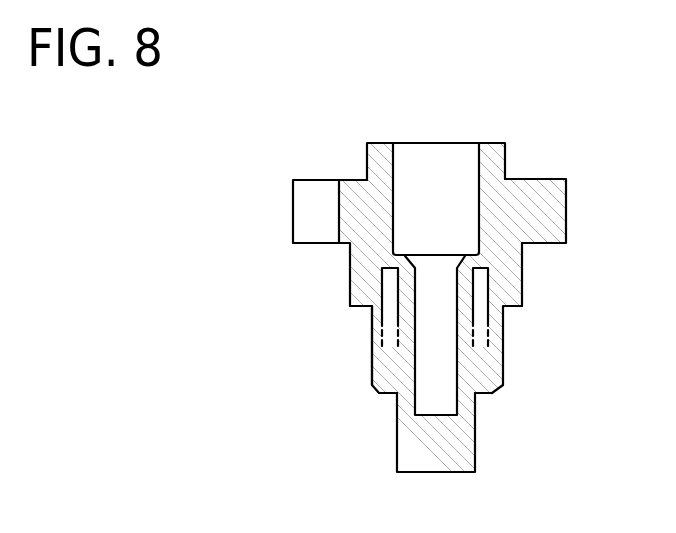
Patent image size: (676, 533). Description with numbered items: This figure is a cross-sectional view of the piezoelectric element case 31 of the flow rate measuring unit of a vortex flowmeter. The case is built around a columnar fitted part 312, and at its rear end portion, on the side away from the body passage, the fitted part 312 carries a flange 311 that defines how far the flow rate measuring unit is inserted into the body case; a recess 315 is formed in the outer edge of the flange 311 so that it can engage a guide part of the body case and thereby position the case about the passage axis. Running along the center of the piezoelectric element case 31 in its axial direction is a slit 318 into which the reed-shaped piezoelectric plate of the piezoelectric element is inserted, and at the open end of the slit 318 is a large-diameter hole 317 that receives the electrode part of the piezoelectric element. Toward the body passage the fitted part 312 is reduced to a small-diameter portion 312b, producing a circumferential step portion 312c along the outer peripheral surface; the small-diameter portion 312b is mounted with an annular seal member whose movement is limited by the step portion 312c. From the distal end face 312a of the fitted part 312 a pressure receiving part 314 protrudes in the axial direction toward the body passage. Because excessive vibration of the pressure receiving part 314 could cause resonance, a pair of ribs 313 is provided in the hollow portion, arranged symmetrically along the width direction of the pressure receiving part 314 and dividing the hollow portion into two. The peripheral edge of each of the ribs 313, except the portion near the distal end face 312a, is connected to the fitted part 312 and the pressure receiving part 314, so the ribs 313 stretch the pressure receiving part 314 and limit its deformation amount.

The piezoelectric element case 31 is at (602, 122).
The flange 311 is at (545, 213).
The fitted part 312 is at (350, 278).
The distal end face 312a is at (483, 393).
The small-diameter portion 312b is at (372, 363).
The step portion 312c is at (365, 310).
The ribs 313 is at (388, 393).
The pressure receiving part 314 is at (418, 453).
The recess 315 is at (307, 212).
The large-diameter hole 317 is at (393, 165).
The slit 318 is at (442, 300).